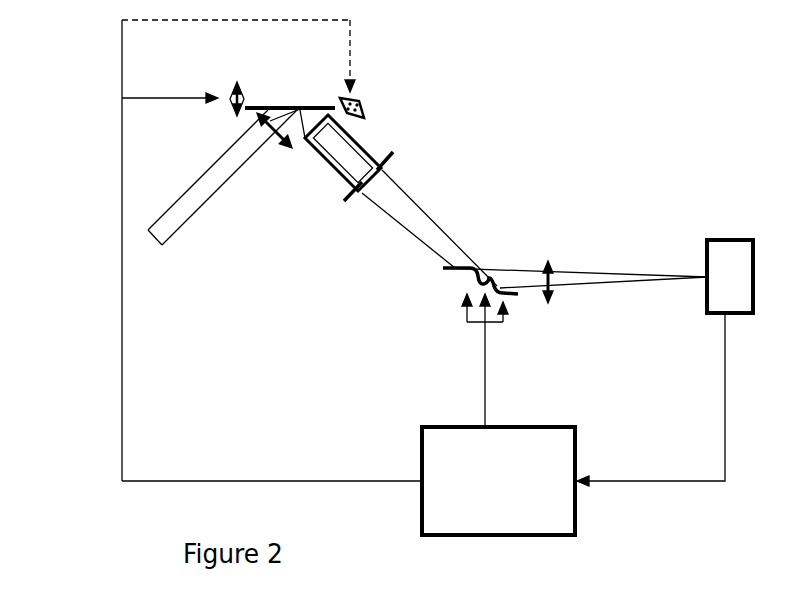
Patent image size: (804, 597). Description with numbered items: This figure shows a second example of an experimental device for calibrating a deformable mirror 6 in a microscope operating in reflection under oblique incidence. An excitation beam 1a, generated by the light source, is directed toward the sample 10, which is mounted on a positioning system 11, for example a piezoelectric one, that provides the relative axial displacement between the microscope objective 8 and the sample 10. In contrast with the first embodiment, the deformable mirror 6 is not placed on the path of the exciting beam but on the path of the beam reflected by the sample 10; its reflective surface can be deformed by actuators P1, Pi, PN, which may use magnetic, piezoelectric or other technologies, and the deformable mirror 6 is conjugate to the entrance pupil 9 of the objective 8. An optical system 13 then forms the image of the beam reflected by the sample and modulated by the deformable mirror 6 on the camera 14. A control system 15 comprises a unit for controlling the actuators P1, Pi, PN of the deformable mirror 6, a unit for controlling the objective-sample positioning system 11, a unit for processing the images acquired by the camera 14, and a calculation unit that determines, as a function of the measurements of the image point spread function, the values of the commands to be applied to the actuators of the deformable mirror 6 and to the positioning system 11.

The excitation beam 1a is at (190, 218).
The deformable mirror 6 is at (443, 268).
The microscope objective 8 is at (329, 164).
The entrance pupil 9 is at (395, 155).
The sample 10 is at (312, 104).
The positioning system 11 is at (152, 22).
The optical system 13 is at (548, 262).
The camera 14 is at (727, 240).
The control system 15 is at (420, 460).
The actuator P1 is at (465, 313).
The actuator Pi is at (488, 312).
The actuator PN is at (508, 313).